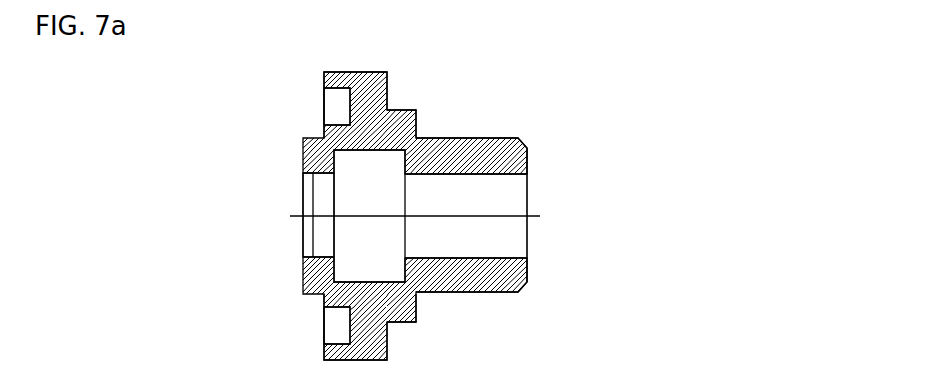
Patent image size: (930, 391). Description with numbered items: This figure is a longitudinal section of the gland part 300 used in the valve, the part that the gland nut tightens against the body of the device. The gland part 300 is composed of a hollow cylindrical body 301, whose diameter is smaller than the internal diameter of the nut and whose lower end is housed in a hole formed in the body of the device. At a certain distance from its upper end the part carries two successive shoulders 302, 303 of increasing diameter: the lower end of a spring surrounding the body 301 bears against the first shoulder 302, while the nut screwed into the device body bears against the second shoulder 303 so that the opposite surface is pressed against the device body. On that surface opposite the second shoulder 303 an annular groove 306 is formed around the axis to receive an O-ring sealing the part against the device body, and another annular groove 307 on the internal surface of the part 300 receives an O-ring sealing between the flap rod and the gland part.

The gland part 300 is at (303, 70).
The hollow cylindrical body 301 is at (493, 292).
The first shoulder 302 is at (416, 130).
The second shoulder 303 is at (387, 89).
The annular groove 306 is at (350, 110).
The annular groove 307 is at (367, 150).